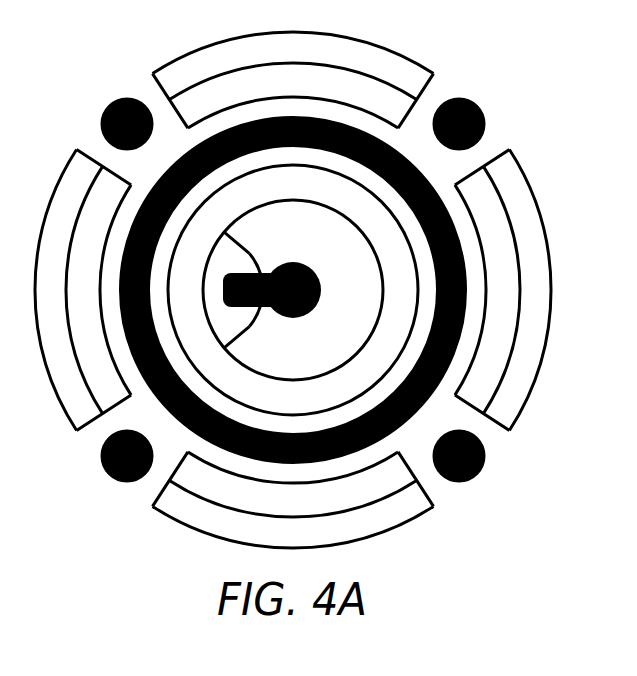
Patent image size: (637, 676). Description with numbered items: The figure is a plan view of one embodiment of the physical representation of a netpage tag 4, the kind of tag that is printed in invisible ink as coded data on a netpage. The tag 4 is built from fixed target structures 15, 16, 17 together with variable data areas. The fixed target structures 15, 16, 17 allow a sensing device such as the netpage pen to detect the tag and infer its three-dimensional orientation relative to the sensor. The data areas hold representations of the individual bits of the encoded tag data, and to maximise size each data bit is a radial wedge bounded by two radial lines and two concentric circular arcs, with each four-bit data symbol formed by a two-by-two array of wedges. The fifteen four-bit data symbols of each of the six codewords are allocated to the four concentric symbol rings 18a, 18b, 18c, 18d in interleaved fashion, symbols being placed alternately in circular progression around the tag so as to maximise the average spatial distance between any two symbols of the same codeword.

The tag 4 is at (300, 277).
The fixed target structure 15 is at (428, 187).
The fixed target structure 16 is at (270, 270).
The fixed target structure 17 is at (472, 103).
The symbol ring 18a is at (293, 290).
The symbol ring 18b is at (293, 290).
The symbol ring 18c is at (293, 500).
The symbol ring 18d is at (293, 287).